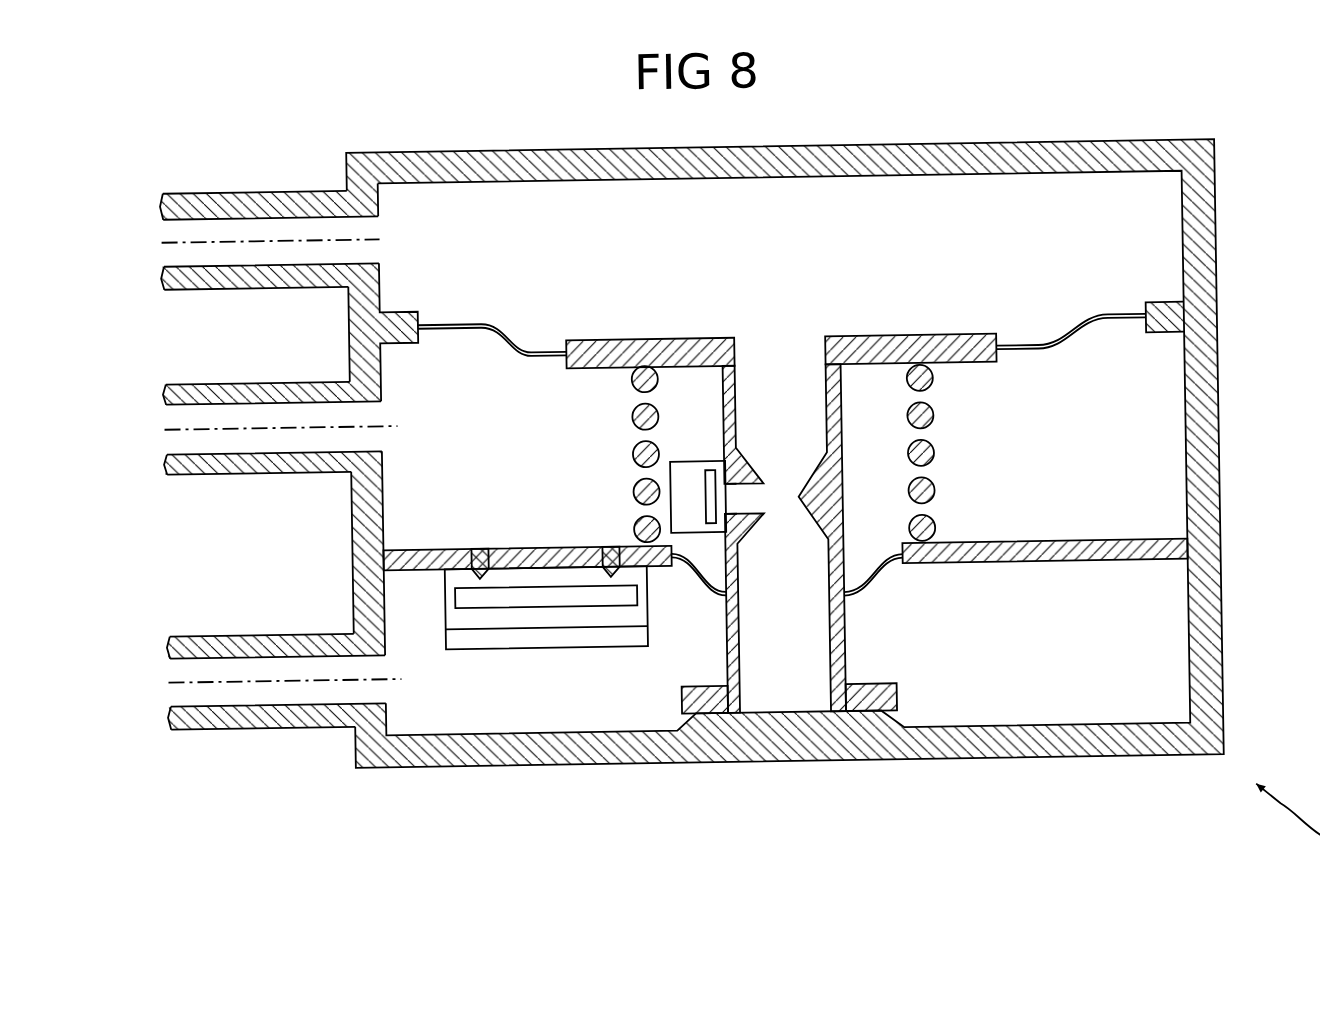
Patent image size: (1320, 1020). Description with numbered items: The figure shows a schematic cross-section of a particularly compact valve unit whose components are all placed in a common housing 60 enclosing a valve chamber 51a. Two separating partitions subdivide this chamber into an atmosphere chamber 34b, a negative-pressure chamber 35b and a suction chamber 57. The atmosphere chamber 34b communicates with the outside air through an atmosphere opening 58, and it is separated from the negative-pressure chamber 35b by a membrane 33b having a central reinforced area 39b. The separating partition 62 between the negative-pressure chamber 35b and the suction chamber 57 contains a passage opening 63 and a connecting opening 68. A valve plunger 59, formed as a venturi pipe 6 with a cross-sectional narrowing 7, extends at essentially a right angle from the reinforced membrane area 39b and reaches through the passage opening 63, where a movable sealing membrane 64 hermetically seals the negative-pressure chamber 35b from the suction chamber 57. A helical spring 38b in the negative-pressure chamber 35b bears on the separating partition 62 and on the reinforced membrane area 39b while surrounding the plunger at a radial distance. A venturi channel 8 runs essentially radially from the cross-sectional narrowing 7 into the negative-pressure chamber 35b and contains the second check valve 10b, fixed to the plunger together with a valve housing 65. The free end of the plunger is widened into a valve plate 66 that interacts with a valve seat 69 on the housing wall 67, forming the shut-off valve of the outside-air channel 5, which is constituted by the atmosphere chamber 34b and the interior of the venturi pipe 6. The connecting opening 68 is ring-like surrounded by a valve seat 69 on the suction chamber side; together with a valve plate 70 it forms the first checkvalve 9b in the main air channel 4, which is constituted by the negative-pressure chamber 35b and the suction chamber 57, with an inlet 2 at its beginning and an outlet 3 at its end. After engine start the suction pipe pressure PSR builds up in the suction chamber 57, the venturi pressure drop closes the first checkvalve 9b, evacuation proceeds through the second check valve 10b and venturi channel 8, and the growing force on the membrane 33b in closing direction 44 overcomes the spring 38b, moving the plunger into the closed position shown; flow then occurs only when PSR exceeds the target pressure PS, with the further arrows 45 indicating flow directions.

The inlet 2 is at (317, 435).
The outlet 3 is at (307, 679).
The main air channel 4 is at (427, 391).
The outside-air channel 5 is at (537, 258).
The venturi pipe 6 is at (777, 612).
The cross-sectional narrowing 7 is at (778, 503).
The venturi channel 8 is at (768, 466).
The first checkvalve 9b is at (527, 596).
The second check valve 10b is at (697, 449).
The membrane 33b is at (1078, 332).
The atmosphere chamber 34b is at (833, 209).
The negative-pressure chamber 35b is at (1177, 362).
The helical spring 38b is at (632, 396).
The central reinforced area 39b is at (605, 344).
The closing direction 44 is at (993, 293).
The flow arrow 45 is at (1096, 267).
The valve chamber 51a is at (1142, 453).
The suction chamber 57 is at (1174, 693).
The atmosphere opening 58 is at (380, 232).
The valve plunger 59 is at (845, 631).
The housing 60 is at (1073, 762).
The separating partition 62 is at (1069, 552).
The passage opening 63 is at (873, 571).
The movable sealing membrane 64 is at (694, 563).
The valve housing 65 is at (683, 469).
The valve plate 66 is at (693, 696).
The housing wall 67 is at (1065, 731).
The connecting opening 68 is at (513, 553).
The valve seat 69 is at (472, 541).
The valve plate 70 is at (487, 598).
The target pressure PS is at (198, 437).
The suction pipe pressure PSR is at (197, 682).